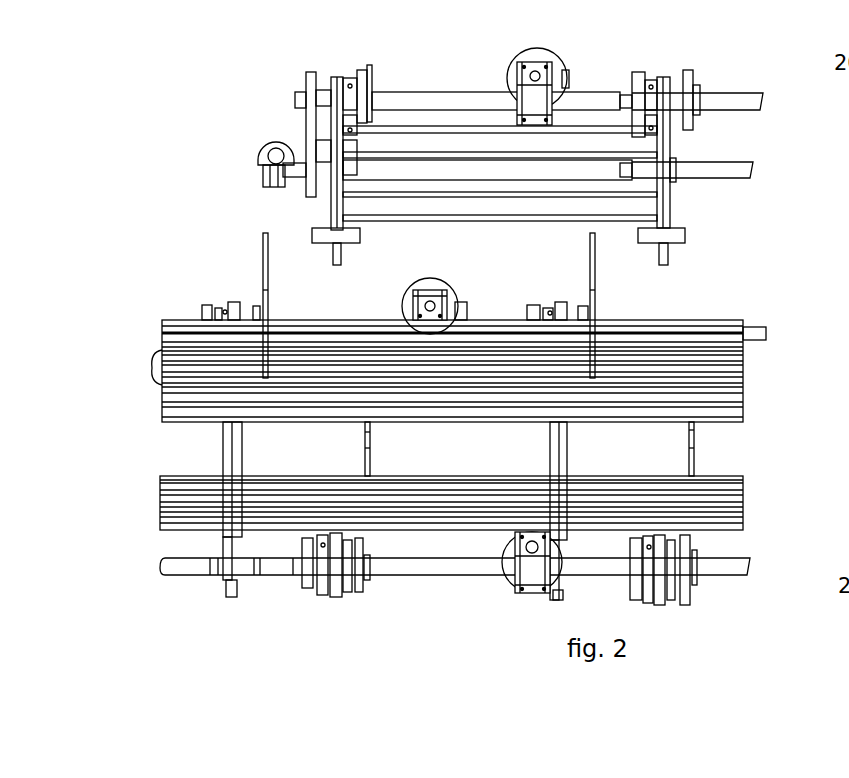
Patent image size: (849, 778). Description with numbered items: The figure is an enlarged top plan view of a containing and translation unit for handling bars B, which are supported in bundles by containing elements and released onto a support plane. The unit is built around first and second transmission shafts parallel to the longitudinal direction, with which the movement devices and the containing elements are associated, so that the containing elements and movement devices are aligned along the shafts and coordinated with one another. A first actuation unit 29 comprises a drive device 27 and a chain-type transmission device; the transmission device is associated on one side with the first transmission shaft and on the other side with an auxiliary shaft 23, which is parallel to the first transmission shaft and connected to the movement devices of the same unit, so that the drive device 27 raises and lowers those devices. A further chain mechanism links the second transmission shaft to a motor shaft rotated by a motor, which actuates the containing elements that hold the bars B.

The auxiliary shaft 23 is at (712, 176).
The drive device 27 is at (258, 163).
The first actuation unit 29 is at (288, 118).
The bars B is at (738, 372).